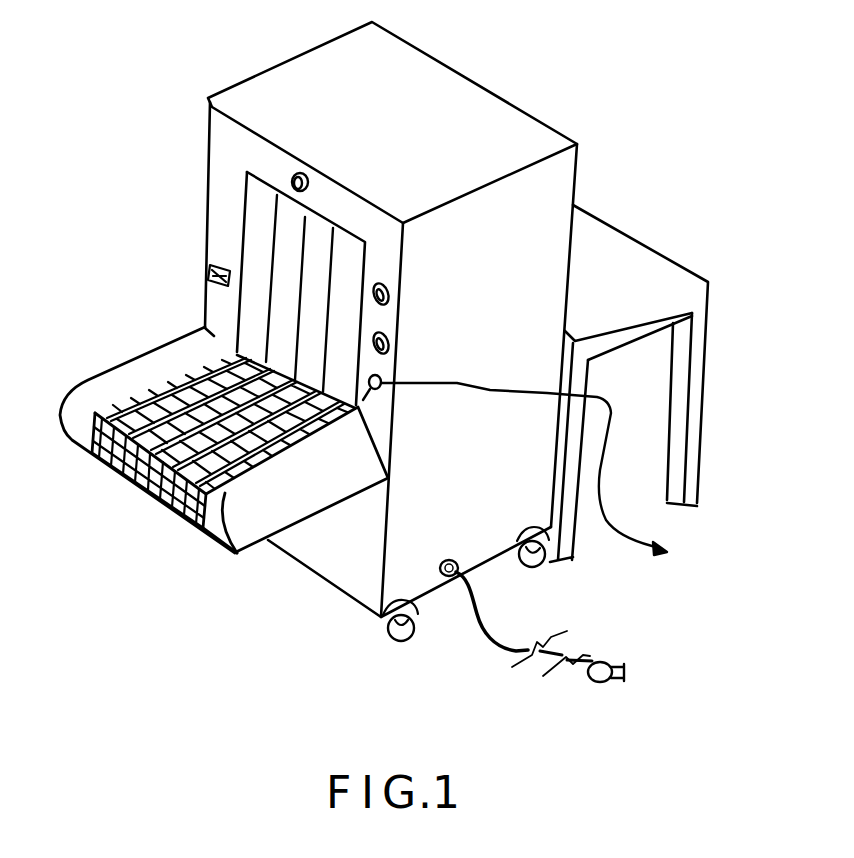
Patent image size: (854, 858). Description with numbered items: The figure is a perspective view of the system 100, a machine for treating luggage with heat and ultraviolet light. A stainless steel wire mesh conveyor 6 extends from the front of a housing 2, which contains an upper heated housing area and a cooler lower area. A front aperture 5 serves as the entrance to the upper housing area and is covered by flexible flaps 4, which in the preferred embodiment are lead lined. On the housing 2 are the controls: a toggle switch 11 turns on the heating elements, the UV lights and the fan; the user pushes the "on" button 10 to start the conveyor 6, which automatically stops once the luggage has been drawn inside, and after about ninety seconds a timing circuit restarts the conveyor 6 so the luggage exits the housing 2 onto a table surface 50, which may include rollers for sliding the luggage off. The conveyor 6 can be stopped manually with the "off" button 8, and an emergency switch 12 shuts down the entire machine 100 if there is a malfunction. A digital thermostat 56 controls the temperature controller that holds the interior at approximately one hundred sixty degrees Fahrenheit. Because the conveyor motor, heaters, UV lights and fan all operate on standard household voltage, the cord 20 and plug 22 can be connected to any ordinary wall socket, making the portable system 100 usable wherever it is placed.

The system 100 is at (190, 614).
The housing 2 is at (472, 103).
The flexible flaps 4 is at (262, 238).
The front aperture 5 is at (243, 200).
The stainless steel wire mesh conveyor 6 is at (174, 398).
The "off" button 8 is at (393, 285).
The "on" button 10 is at (393, 337).
The toggle switch 11 is at (533, 472).
The emergency switch 12 is at (296, 177).
The cord 20 is at (499, 640).
The plug 22 is at (609, 650).
The table surface 50 is at (654, 272).
The digital thermostat 56 is at (210, 273).